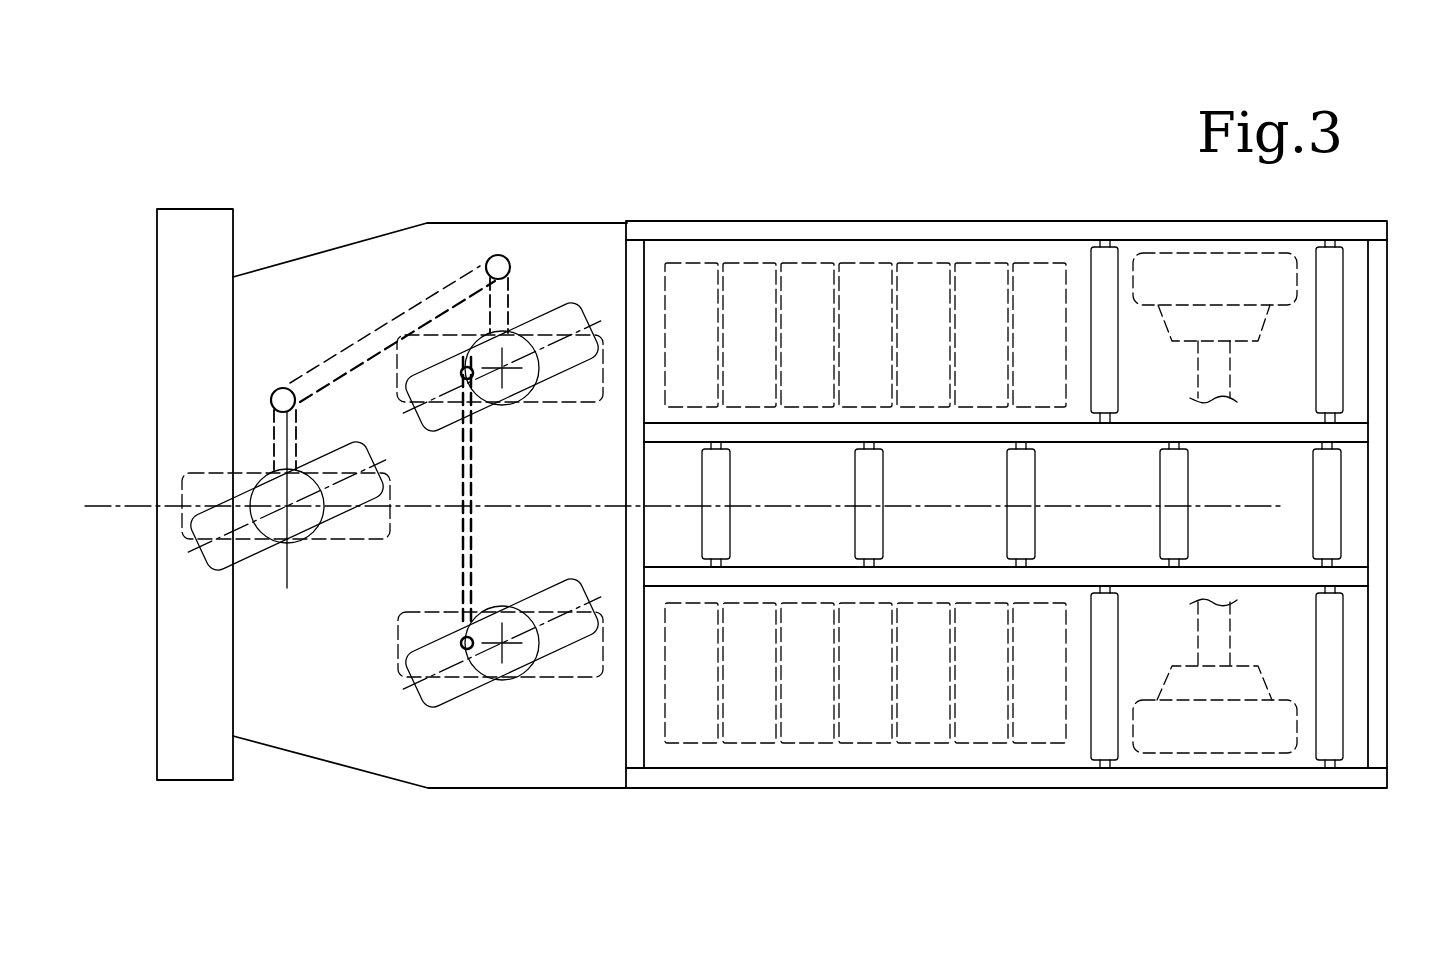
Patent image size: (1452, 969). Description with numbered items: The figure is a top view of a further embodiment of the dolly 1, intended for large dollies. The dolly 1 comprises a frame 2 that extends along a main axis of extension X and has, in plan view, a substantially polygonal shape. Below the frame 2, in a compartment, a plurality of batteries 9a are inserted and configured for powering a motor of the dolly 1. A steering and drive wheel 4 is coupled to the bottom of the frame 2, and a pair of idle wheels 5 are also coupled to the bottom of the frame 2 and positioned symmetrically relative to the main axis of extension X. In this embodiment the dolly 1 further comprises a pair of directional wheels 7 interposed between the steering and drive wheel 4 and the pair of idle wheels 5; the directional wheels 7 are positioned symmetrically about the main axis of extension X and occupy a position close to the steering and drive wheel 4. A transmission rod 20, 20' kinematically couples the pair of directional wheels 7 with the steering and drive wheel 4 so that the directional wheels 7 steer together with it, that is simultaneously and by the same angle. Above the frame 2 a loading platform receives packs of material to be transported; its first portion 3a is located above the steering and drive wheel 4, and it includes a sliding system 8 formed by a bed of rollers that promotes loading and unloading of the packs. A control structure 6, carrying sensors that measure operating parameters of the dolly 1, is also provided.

The dolly 1 is at (326, 160).
The frame 2 is at (751, 217).
The first portion 3a is at (335, 720).
The steering and drive wheel 4 is at (205, 485).
The idle wheels 5 is at (1217, 275).
The control structure 6 is at (192, 750).
The directional wheels 7 is at (442, 333).
The sliding system 8 is at (1343, 472).
The batteries 9a is at (922, 295).
The transmission rod 20 is at (390, 288).
The transmission rod 20' is at (513, 491).
The main axis of extension X is at (107, 505).